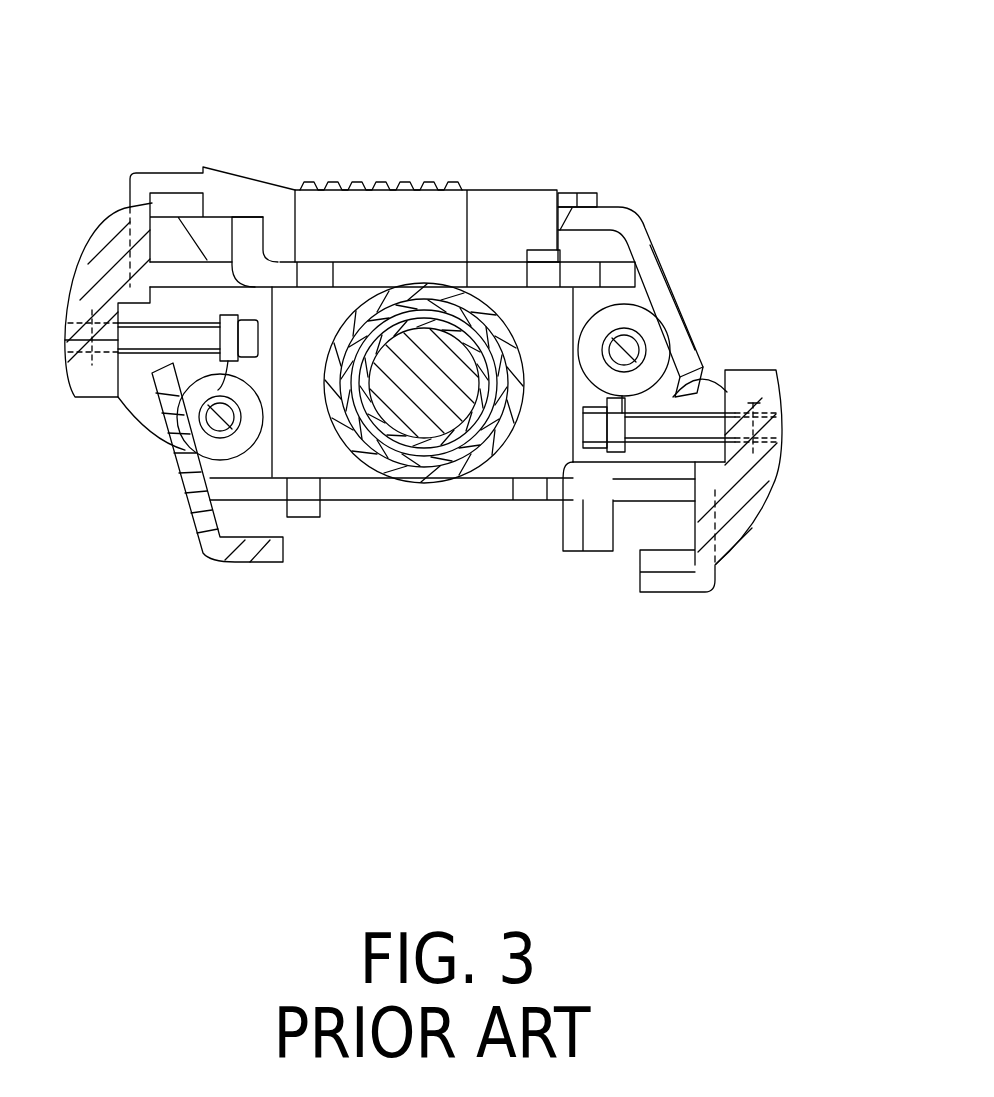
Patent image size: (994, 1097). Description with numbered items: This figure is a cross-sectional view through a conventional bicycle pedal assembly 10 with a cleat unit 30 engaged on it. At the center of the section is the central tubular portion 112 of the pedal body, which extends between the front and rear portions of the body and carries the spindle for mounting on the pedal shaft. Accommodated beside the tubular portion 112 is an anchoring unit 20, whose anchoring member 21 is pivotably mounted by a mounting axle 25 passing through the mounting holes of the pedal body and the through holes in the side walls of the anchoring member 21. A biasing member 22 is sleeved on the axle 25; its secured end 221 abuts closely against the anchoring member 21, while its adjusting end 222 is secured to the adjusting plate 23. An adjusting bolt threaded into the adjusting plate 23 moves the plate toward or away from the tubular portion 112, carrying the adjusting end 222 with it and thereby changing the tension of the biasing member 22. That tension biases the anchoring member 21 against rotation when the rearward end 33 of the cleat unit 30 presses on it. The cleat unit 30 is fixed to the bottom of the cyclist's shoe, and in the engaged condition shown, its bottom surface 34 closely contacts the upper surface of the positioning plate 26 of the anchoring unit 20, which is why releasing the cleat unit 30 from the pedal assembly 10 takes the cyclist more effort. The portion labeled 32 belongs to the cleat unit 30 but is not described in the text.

The bicycle pedal assembly 10 is at (87, 258).
The central tubular portion 112 is at (487, 460).
The anchoring unit 20 is at (658, 250).
The anchoring member 21 is at (657, 247).
The biasing member 22 is at (703, 397).
The secured end 221 is at (690, 330).
The adjusting end 222 is at (643, 415).
The adjusting plate 23 is at (573, 464).
The mounting axle 25 is at (629, 333).
The positioning plate 26 is at (352, 264).
The cleat unit 30 is at (503, 189).
The left cover block 32 is at (215, 180).
The rearward end 33 is at (572, 193).
The bottom surface 34 is at (420, 263).